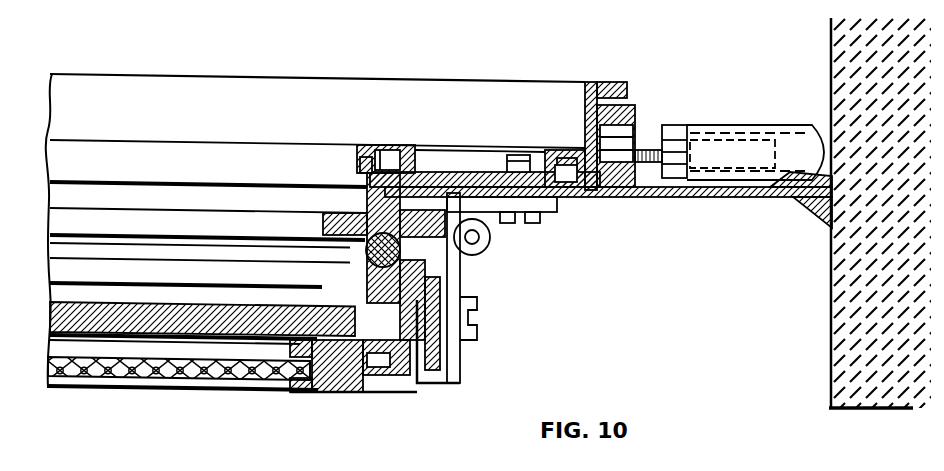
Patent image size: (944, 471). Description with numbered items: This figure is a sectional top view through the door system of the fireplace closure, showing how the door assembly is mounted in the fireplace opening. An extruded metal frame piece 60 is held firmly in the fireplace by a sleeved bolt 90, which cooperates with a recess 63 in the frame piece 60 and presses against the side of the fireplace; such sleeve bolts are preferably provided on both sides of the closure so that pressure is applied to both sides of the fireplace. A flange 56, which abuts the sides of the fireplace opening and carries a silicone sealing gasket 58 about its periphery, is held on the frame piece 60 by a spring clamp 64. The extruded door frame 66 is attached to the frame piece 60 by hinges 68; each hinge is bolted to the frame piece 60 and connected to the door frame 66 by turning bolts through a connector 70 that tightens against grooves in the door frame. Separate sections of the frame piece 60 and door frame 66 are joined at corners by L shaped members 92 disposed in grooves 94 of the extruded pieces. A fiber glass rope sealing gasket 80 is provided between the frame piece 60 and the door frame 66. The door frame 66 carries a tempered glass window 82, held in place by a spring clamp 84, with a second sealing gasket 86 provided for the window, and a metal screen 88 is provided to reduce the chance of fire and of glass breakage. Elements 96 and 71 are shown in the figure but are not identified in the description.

The extruded metal frame piece 60 is at (268, 76).
The recess 63 is at (625, 98).
The sleeved bolt 90 is at (790, 128).
The L shaped member 92 is at (388, 150).
The groove 94 is at (360, 165).
The sealing gasket 80 is at (365, 228).
The hinge pin 96 is at (322, 228).
The flange 56 is at (653, 198).
The sealing gasket 58 is at (820, 218).
The spring clamp 64 is at (483, 241).
The hinge 68 is at (461, 265).
The clip 71 is at (478, 333).
The extruded door frame 66 is at (122, 401).
The metal screen 88 is at (195, 380).
The tempered glass window 82 is at (252, 330).
The second sealing gasket 86 is at (303, 390).
The spring clamp 84 is at (334, 394).
The connector 70 is at (433, 385).